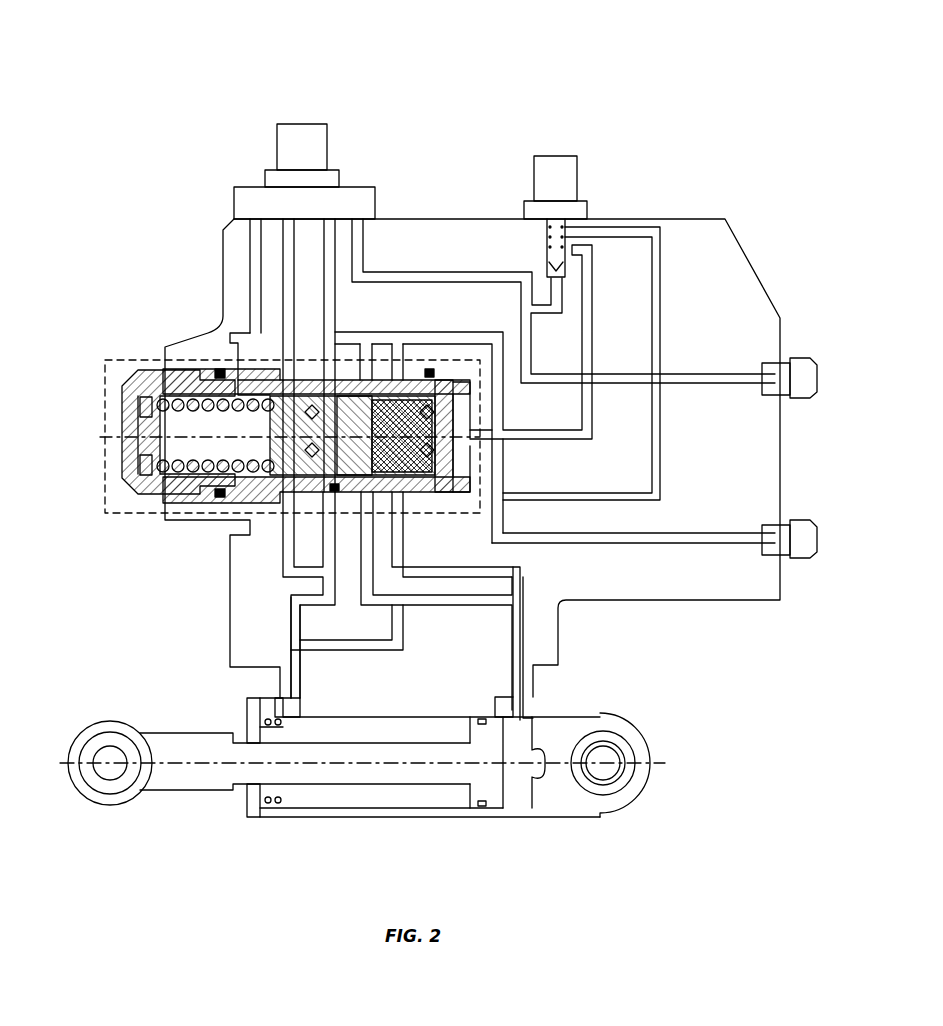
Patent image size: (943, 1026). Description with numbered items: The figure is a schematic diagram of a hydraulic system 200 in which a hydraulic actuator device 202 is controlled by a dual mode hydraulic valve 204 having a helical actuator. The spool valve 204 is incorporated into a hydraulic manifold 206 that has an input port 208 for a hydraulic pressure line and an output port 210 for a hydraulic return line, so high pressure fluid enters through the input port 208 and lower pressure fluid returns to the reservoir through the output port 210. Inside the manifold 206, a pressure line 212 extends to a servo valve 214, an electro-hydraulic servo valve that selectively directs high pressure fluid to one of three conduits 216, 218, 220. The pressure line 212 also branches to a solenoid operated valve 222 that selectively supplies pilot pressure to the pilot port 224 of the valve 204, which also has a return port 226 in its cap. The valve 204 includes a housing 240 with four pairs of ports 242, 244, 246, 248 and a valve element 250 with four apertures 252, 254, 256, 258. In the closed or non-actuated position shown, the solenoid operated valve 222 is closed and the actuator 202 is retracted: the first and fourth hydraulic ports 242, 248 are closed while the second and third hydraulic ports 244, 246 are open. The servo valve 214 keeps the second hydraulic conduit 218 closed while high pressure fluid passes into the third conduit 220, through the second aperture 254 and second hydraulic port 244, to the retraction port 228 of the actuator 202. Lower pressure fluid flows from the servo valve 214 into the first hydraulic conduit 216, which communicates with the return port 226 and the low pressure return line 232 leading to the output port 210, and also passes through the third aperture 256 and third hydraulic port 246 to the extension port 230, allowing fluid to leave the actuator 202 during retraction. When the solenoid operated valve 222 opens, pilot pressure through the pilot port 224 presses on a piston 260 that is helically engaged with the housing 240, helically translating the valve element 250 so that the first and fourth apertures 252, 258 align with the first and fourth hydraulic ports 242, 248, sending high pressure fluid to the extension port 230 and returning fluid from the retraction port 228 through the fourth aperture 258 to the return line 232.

The hydraulic system 200 is at (492, 100).
The hydraulic actuator device 202 is at (282, 832).
The dual mode hydraulic valve 204 is at (137, 360).
The hydraulic manifold 206 is at (735, 262).
The input port 208 is at (800, 373).
The output port 210 is at (800, 553).
The pressure line 212 is at (418, 272).
The servo valve 214 is at (291, 136).
The first hydraulic conduit 216 is at (252, 235).
The second hydraulic conduit 218 is at (288, 255).
The third hydraulic conduit 220 is at (330, 283).
The solenoid operated valve 222 is at (565, 170).
The pilot port 224 is at (470, 445).
The return port 226 is at (186, 368).
The retraction port 228 is at (290, 700).
The extension port 230 is at (525, 692).
The low pressure return line 232 is at (610, 545).
The housing 240 is at (236, 336).
The first hydraulic port 242 is at (320, 347).
The second hydraulic port 244 is at (355, 350).
The third hydraulic port 246 is at (400, 356).
The fourth hydraulic port 248 is at (412, 387).
The valve element 250 is at (405, 427).
The first aperture 252 is at (162, 436).
The second aperture 254 is at (270, 430).
The third aperture 256 is at (405, 498).
The fourth aperture 258 is at (435, 495).
The piston 260 is at (470, 410).